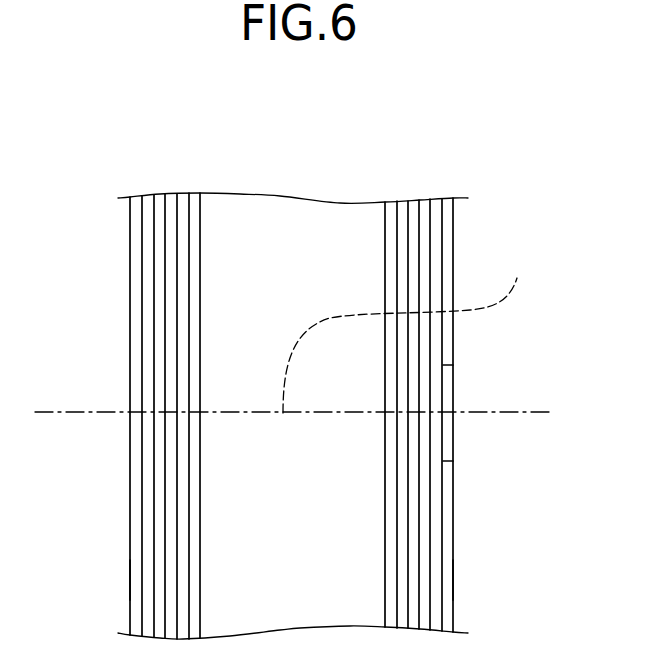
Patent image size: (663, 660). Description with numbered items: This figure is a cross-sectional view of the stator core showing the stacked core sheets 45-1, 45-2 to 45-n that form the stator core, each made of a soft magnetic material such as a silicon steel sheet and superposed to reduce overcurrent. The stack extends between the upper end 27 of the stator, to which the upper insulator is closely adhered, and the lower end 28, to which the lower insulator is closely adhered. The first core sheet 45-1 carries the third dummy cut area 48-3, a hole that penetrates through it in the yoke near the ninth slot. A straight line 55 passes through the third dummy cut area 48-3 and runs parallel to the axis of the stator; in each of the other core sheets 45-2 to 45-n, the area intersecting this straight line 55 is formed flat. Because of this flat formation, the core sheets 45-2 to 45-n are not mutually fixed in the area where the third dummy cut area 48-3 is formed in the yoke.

The upper end 27 is at (130, 577).
The lower end 28 is at (455, 578).
The straight line 55 is at (406, 332).
The third dummy cut area 48-3 is at (451, 371).
The core sheet 45-1 is at (447, 215).
The core sheet 45-2 is at (443, 183).
The core sheet 45-n is at (475, 132).